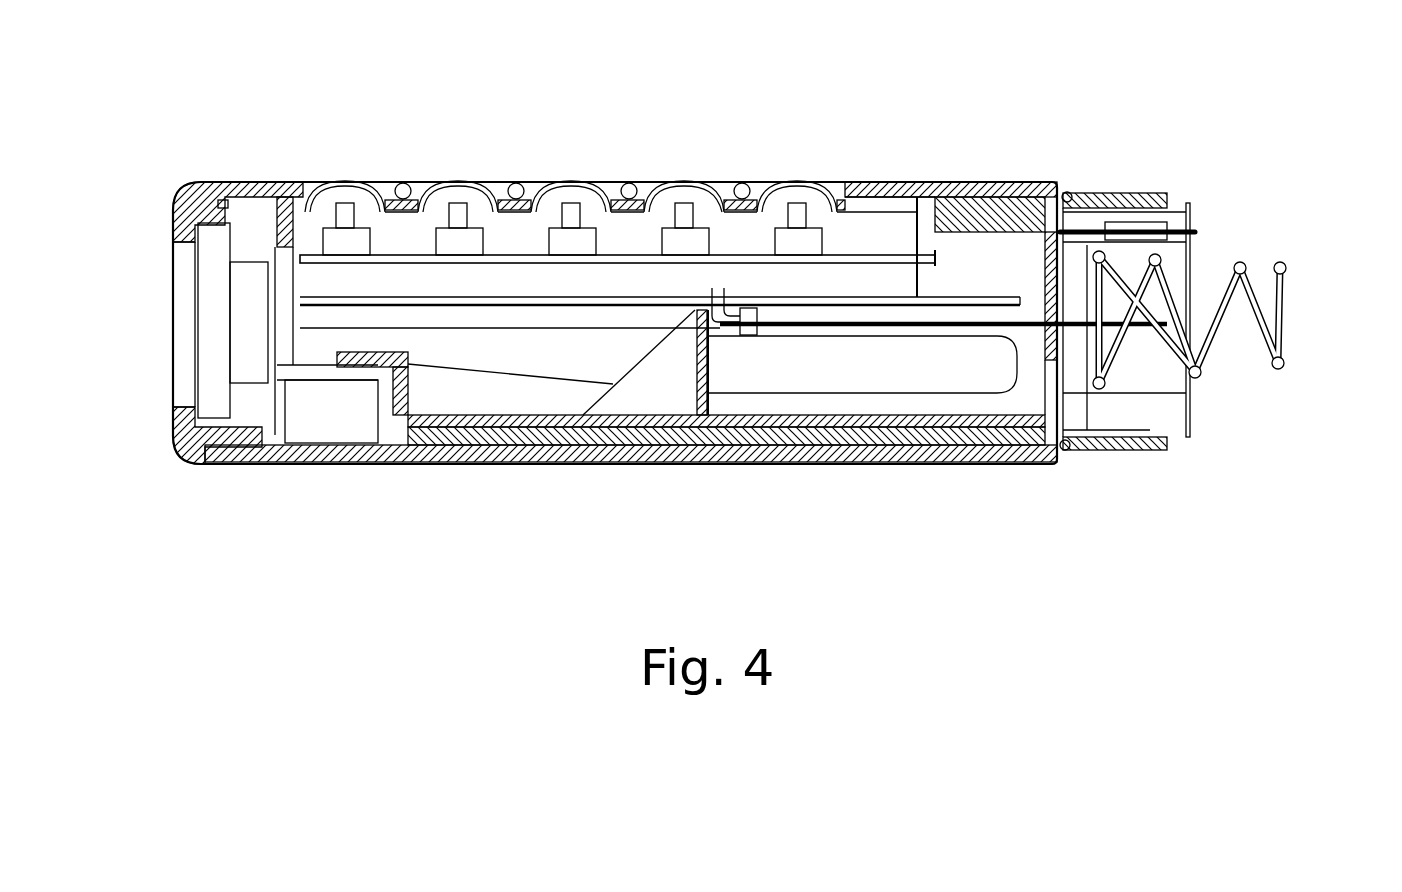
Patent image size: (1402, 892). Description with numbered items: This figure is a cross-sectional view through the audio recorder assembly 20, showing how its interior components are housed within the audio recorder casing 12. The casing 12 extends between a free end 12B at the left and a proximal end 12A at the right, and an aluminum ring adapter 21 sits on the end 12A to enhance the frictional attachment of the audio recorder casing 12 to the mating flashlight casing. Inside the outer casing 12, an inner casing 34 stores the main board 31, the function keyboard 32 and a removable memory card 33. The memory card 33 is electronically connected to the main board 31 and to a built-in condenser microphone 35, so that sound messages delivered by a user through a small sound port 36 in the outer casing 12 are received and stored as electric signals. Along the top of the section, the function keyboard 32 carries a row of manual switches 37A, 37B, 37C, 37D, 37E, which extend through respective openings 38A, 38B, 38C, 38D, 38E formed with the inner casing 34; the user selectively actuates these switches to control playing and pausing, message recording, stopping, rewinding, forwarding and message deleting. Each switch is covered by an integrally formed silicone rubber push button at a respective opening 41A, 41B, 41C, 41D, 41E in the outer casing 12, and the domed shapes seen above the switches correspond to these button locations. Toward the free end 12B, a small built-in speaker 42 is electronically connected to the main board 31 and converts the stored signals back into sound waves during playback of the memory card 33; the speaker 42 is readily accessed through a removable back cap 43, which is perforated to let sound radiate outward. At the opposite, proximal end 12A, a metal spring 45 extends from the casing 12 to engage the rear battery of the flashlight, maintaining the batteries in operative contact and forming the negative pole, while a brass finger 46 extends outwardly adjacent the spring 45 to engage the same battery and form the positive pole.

The audio recorder assembly 20 is at (240, 142).
The audio recorder casing 12 is at (518, 465).
The proximal end of the audio recorder casing 12A is at (1187, 453).
The free end of the audio recorder casing 12B is at (187, 463).
The aluminum ring adapter 21 is at (1135, 200).
The main board 31 is at (963, 297).
The function keyboard 32 is at (930, 247).
The removable memory card 33 is at (1158, 312).
The inner casing 34 is at (942, 440).
The built-in condenser microphone 35 is at (325, 408).
The sound port 36 is at (307, 465).
The manual switch 37A is at (347, 183).
The manual switch 37B is at (460, 183).
The manual switch 37C is at (573, 183).
The manual switch 37D is at (686, 183).
The manual switch 37E is at (799, 183).
The opening in the inner casing 38A is at (322, 196).
The opening in the inner casing 38B is at (440, 196).
The opening in the inner casing 38C is at (553, 196).
The opening in the inner casing 38D is at (666, 196).
The opening in the inner casing 38E is at (779, 196).
The opening in the outer casing 41A is at (308, 187).
The opening in the outer casing 41B is at (426, 187).
The opening in the outer casing 41C is at (539, 187).
The opening in the outer casing 41D is at (652, 187).
The opening in the outer casing 41E is at (765, 187).
The built-in speaker 42 is at (208, 348).
The removable back cap 43 is at (175, 223).
The metal spring 45 is at (1285, 333).
The brass finger 46 is at (1198, 230).